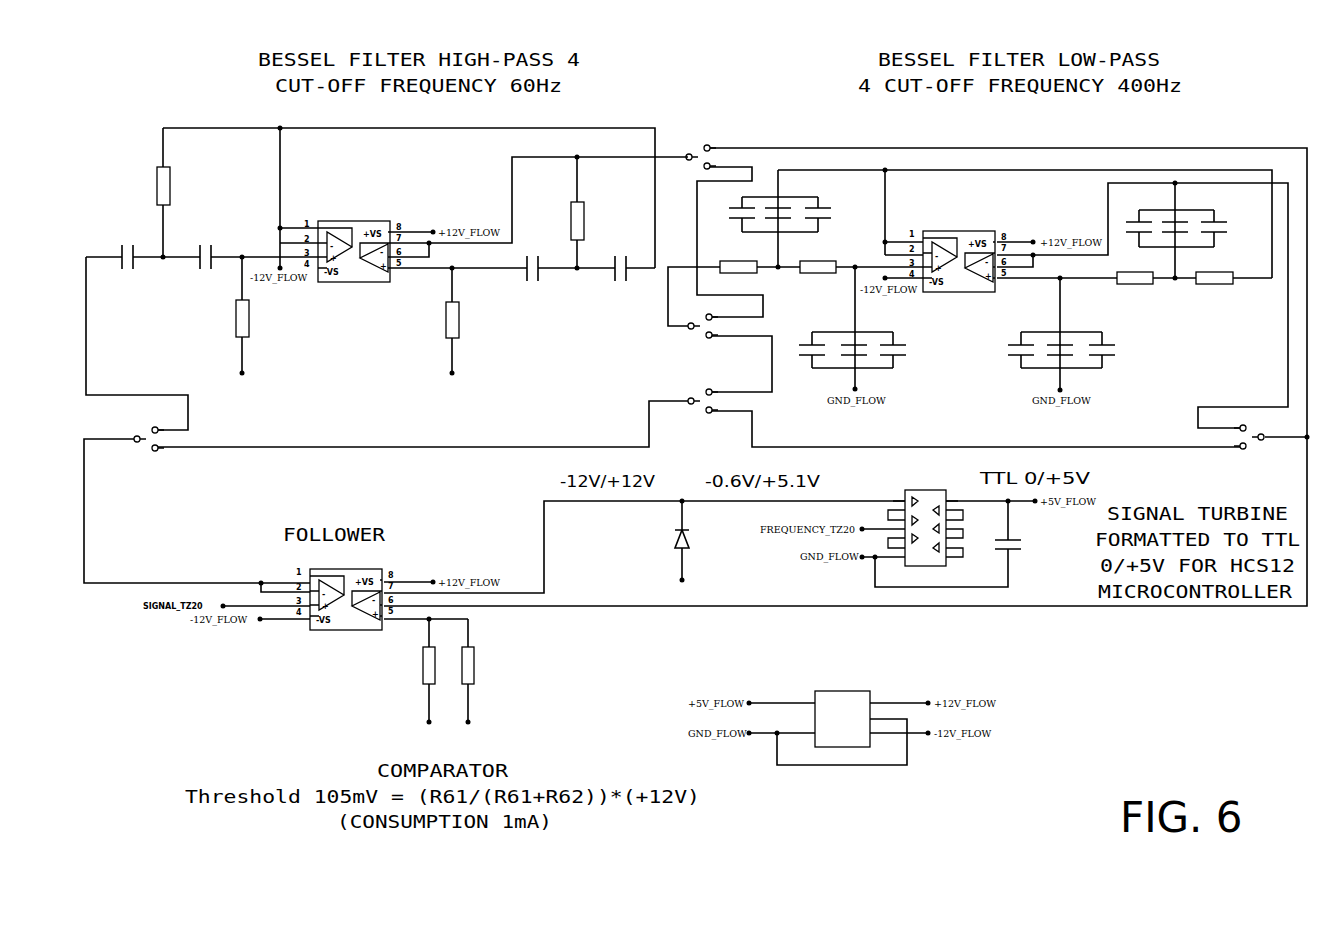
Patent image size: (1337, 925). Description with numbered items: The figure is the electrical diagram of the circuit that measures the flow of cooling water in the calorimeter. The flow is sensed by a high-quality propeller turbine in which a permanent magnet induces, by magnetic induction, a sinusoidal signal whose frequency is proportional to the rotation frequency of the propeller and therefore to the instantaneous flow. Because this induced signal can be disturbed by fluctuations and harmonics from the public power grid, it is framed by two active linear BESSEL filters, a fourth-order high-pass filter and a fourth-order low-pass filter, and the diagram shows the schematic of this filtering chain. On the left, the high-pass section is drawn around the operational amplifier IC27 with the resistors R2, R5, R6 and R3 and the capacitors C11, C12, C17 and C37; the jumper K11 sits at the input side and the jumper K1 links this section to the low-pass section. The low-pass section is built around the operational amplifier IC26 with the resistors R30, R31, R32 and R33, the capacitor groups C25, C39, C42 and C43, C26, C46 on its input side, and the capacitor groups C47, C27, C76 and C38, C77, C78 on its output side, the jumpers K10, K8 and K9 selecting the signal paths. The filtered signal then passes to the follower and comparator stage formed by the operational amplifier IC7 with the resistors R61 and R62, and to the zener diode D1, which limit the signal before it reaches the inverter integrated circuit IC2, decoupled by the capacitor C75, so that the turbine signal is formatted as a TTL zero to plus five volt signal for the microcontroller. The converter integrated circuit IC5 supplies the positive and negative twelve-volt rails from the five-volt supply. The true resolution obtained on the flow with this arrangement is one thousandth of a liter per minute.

The resistor 261K R2 is at (192, 192).
The capacitor 100nF C11 is at (116, 251).
The capacitor 100nF C12 is at (196, 251).
The resistor 6K8 R5 is at (258, 325).
The resistor 3K92 R6 is at (427, 330).
The operational amplifier TL082CP IC27 is at (353, 241).
The capacitor 100nF C17 is at (514, 262).
The resistor 363K R3 is at (603, 225).
The capacitor 100nF C37 is at (611, 273).
The jumper K11 is at (148, 448).
The jumper K1 is at (710, 143).
The jumper K10 is at (723, 322).
The jumper K8 is at (713, 388).
The jumper K9 is at (1251, 452).
The resistor 10K R30 is at (730, 256).
The resistor 10K R31 is at (810, 256).
The capacitor 33nF C25 is at (767, 214).
The capacitor 4.7nF C39 is at (773, 208).
The capacitor 2.2nF C42 is at (820, 214).
The capacitor 10nF C43 is at (839, 350).
The capacitor 3.3nF C26 is at (848, 344).
The capacitor 2.2nF C46 is at (896, 350).
The operational amplifier TL082CP IC26 is at (958, 250).
The capacitor 22nF C47 is at (1165, 228).
The capacitor 4.7nF C27 is at (1176, 222).
The capacitor 2.2nF C76 is at (1215, 228).
The resistor 10K R32 is at (1127, 269).
The resistor 10K R33 is at (1207, 269).
The capacitor 22nF C38 is at (1049, 350).
The capacitor 2.2nF C77 is at (1064, 344).
The capacitor 2.2nF C78 is at (1105, 350).
The operational amplifier follower TL082CP IC7 is at (345, 589).
The resistor 1K33 R61 is at (411, 680).
The resistor 150K R62 is at (493, 680).
The zener diode BZX85C5V1 D1 is at (663, 549).
The hex inverter 74LS04N IC2 is at (925, 518).
The capacitor 100nF C75 is at (1018, 536).
The DC-DC converter NMH0512D IC5 is at (843, 710).